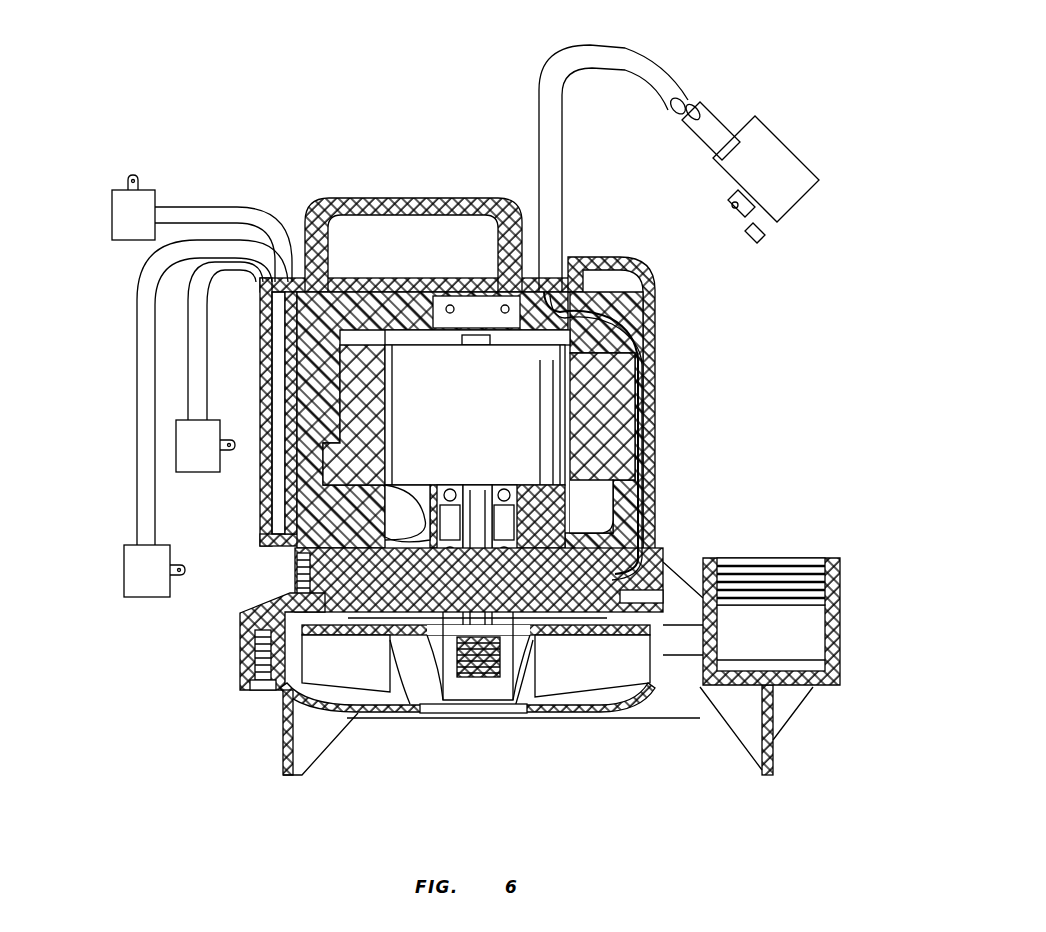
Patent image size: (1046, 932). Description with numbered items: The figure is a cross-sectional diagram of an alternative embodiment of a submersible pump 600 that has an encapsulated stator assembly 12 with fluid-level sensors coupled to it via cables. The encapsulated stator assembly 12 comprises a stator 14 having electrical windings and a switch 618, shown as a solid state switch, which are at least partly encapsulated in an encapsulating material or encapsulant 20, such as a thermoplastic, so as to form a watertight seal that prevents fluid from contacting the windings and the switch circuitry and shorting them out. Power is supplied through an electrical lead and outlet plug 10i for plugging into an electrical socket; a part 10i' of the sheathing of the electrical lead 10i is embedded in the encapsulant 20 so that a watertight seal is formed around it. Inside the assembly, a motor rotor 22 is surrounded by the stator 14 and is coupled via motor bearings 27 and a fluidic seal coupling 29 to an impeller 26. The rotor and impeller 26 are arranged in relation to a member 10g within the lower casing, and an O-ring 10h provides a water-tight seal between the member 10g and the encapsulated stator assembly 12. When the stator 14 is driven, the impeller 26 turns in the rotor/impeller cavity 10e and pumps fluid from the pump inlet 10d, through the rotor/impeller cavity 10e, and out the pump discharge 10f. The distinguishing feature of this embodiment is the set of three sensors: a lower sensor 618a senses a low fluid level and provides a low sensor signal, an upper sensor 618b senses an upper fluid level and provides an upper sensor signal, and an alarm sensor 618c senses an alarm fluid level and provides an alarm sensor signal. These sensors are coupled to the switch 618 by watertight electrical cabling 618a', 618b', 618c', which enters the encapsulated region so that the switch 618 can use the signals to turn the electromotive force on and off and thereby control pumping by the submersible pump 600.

The submersible pump 600 is at (272, 66).
The lower sensor 618a is at (148, 154).
The watertight electrical cabling 618a' is at (223, 215).
The switch 618 is at (300, 285).
The part of the sheathing of the electrical lead 10i' is at (569, 370).
The encapsulating material or encapsulant 20 is at (600, 258).
The electrical lead and outlet plug 10i is at (687, 168).
The encapsulated stator assembly 12 is at (660, 290).
The stator 14 is at (612, 386).
The motor bearings 27 is at (500, 492).
The pump discharge 10f is at (776, 545).
The motor rotor 22 is at (477, 407).
The watertight electrical cabling 618b' is at (174, 341).
The watertight electrical cabling 618c' is at (187, 392).
The upper sensor 618b is at (216, 502).
The alarm sensor 618c is at (146, 632).
The member 10g is at (375, 602).
The O-ring 10h is at (588, 592).
The rotor/impeller cavity 10e is at (412, 692).
The fluidic seal coupling 29 is at (510, 684).
The pump inlet 10d is at (448, 722).
The impeller 26 is at (575, 712).